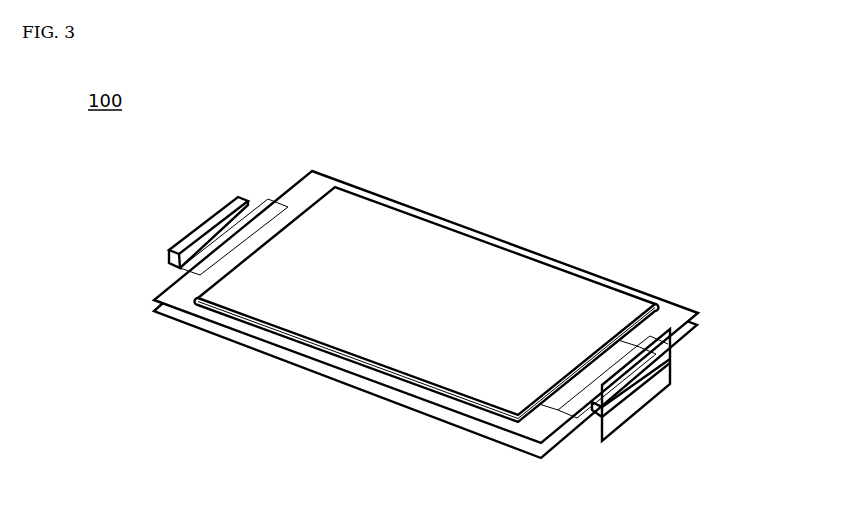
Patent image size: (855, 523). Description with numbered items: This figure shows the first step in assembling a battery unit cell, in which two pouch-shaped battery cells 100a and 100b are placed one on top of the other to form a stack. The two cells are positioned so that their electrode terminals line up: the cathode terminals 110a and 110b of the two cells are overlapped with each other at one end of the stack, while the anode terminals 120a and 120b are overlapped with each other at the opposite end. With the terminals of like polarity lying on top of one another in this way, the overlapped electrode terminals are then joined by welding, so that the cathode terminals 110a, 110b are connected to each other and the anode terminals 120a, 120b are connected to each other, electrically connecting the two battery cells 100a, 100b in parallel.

The pouch-shaped battery cell 100a is at (516, 241).
The pouch-shaped battery cell 100b is at (283, 360).
The cathode terminal 110a is at (200, 220).
The cathode terminal 110b is at (171, 249).
The anode terminal 120a is at (670, 350).
The anode terminal 120b is at (640, 405).